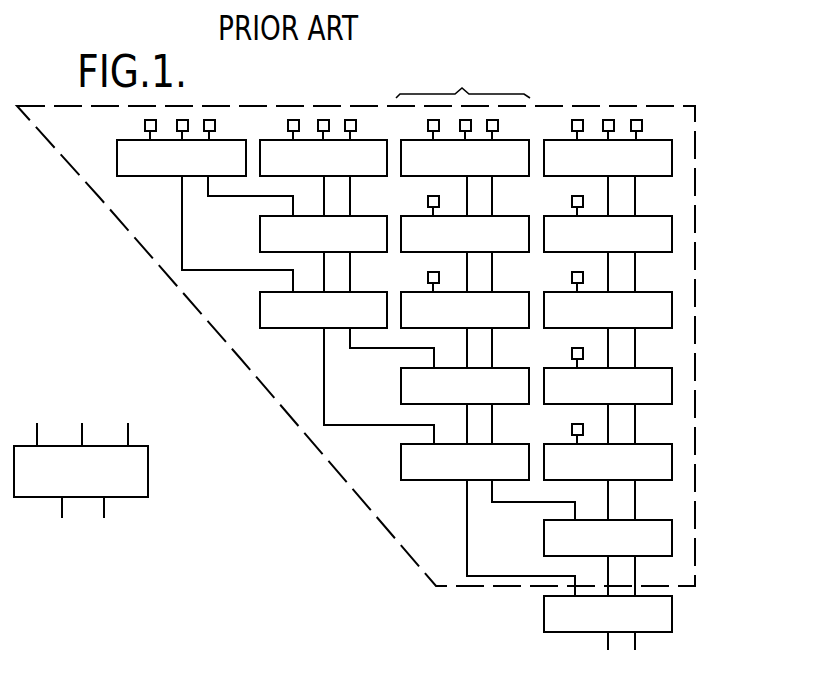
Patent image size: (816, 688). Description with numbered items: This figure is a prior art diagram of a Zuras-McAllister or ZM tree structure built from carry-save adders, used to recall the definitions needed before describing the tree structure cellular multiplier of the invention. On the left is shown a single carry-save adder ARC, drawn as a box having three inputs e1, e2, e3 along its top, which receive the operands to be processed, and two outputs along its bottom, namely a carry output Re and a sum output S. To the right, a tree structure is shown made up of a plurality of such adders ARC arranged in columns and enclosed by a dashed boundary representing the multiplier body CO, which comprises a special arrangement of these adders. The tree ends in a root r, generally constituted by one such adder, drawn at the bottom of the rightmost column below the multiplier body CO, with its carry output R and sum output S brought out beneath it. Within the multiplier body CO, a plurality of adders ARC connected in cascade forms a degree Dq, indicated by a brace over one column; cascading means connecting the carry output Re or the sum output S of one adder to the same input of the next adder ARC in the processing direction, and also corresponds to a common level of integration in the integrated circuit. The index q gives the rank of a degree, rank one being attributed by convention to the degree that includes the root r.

The carry-save adder ARC is at (662, 157).
The multiplier body CO is at (682, 342).
The degree Dq is at (463, 76).
The root r is at (657, 613).
The first input e1 is at (41, 422).
The second input e2 is at (88, 422).
The third input e3 is at (134, 422).
The carry output Re is at (47, 521).
The sum output S is at (375, 590).
The carry output of final cell R is at (611, 657).